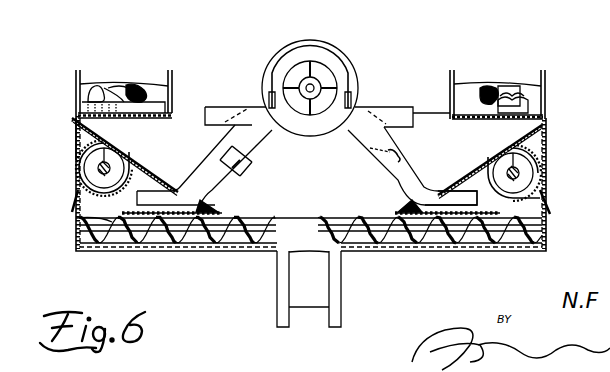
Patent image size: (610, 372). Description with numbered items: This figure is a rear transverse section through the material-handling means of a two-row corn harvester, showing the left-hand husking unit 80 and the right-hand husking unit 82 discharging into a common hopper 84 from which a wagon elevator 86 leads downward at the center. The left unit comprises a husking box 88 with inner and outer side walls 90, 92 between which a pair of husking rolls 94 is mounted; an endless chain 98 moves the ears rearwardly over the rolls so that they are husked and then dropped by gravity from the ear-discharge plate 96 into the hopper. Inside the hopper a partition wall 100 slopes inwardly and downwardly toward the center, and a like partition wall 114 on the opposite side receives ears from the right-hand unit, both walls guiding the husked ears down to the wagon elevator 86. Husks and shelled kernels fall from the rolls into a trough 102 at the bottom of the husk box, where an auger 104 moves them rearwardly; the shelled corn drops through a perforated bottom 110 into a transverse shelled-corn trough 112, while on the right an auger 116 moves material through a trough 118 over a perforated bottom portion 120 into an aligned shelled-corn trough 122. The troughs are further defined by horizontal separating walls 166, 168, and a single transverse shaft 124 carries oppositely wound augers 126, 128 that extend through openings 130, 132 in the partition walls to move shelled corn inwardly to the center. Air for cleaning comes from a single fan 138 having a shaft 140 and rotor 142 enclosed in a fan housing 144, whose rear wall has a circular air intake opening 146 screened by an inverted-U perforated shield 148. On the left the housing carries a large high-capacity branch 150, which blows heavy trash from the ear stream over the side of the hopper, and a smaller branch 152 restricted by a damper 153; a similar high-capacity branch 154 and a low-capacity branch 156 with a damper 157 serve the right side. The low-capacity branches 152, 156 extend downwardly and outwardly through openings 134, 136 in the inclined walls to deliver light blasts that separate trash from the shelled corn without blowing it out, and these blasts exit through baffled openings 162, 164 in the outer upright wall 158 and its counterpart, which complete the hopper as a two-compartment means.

The left-hand husking unit 80 is at (78, 66).
The right-hand husking unit 82 is at (552, 65).
The hopper 84 is at (74, 135).
The wagon elevator 86 is at (278, 293).
The husking box 88 is at (74, 73).
The inner side wall 90 is at (172, 84).
The outer side wall 92 is at (80, 90).
The husking rolls 94 is at (98, 86).
The ear-discharge plate 96 is at (82, 107).
The endless chain conveyor 98 is at (138, 85).
The partition wall 100 is at (152, 171).
The trough 102 is at (82, 170).
The auger 104 is at (100, 160).
The perforated bottom 110 is at (80, 193).
The shelled-corn trough 112 is at (104, 251).
The partition wall 114 is at (518, 145).
The auger 116 is at (527, 165).
The trough 118 is at (545, 173).
The perforated bottom portion 120 is at (544, 192).
The shelled-corn trough 122 is at (518, 251).
The transverse rotatable shaft 124 is at (330, 232).
The auger 126 is at (168, 242).
The auger 128 is at (442, 242).
The opening 130 is at (220, 211).
The opening 132 is at (408, 210).
The opening 134 is at (215, 186).
The opening 136 is at (432, 190).
The air-current generating means 138 is at (322, 38).
The rotatable shaft 140 is at (320, 82).
The rotor 142 is at (322, 92).
The fan housing 144 is at (290, 44).
The air intake opening 146 is at (316, 86).
The perforated shield 148 is at (278, 58).
The air-current directing branch 150 is at (216, 107).
The air-current directing branch 152 is at (222, 142).
The damper 153 is at (243, 162).
The high-capacity branch 154 is at (403, 107).
The low-capacity branch 156 is at (390, 151).
The damper 157 is at (378, 157).
The outer longitudinal upright wall 158 is at (78, 238).
The baffled opening 162 is at (70, 212).
The baffled opening 164 is at (552, 216).
The horizontal separating wall 166 is at (198, 200).
The horizontal separating wall 168 is at (400, 196).